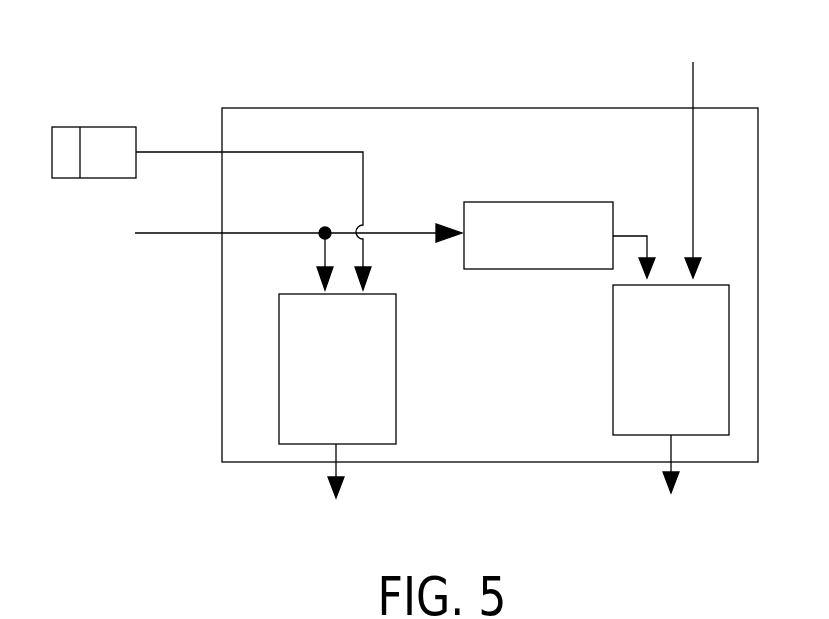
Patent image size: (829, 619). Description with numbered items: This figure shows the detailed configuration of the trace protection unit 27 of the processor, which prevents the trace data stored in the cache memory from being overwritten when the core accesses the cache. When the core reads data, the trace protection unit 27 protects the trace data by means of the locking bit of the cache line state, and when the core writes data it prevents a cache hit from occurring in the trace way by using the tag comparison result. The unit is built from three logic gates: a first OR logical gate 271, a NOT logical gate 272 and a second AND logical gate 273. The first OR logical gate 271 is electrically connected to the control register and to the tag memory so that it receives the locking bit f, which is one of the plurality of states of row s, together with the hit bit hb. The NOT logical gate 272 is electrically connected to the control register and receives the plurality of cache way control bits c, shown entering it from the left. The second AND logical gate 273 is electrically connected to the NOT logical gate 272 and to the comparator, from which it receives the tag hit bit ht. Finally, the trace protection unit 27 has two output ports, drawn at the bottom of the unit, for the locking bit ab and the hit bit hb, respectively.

The trace protection unit 27 is at (447, 108).
The first OR logical gate 271 is at (396, 368).
The NOT logical gate 272 is at (519, 210).
The second AND logical gate 273 is at (613, 351).
The row s is at (211, 162).
The locking bit f is at (97, 127).
The cache way control bit c is at (286, 254).
The tag hit bit ht is at (693, 152).
The locking bit ab is at (336, 488).
The hit bit hb is at (671, 484).